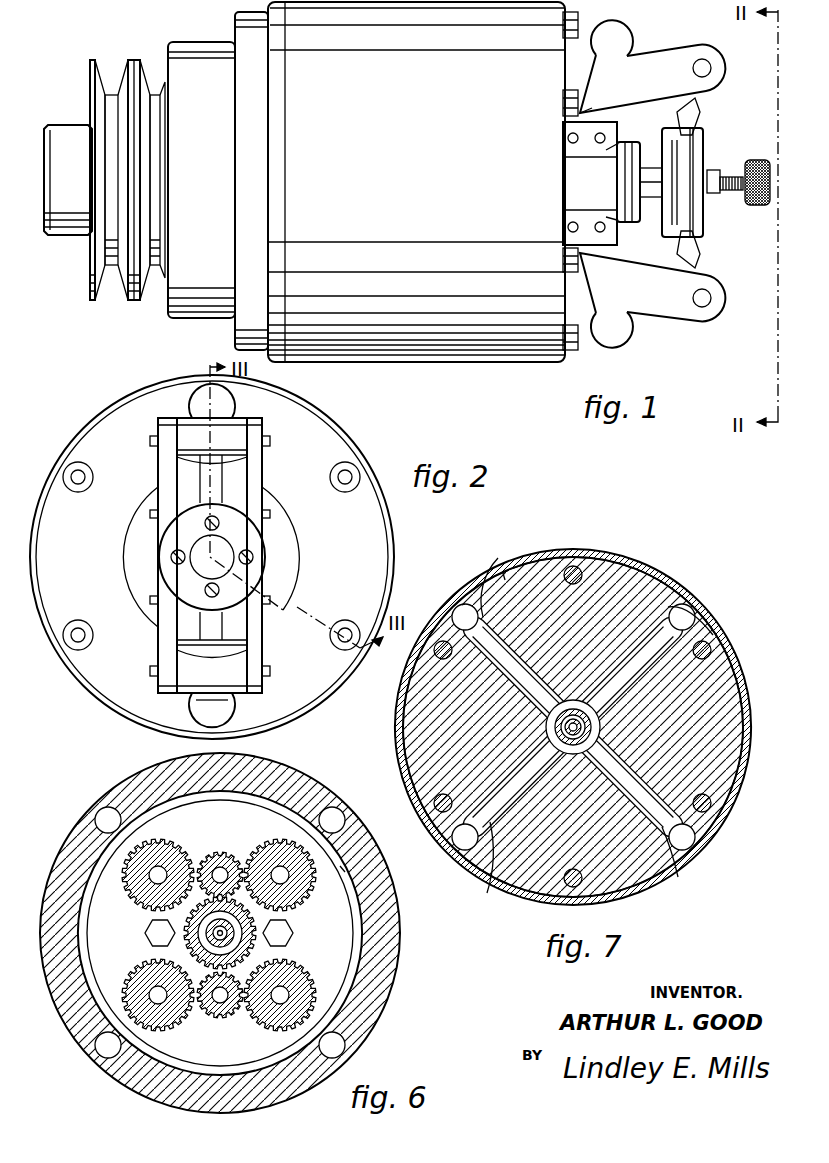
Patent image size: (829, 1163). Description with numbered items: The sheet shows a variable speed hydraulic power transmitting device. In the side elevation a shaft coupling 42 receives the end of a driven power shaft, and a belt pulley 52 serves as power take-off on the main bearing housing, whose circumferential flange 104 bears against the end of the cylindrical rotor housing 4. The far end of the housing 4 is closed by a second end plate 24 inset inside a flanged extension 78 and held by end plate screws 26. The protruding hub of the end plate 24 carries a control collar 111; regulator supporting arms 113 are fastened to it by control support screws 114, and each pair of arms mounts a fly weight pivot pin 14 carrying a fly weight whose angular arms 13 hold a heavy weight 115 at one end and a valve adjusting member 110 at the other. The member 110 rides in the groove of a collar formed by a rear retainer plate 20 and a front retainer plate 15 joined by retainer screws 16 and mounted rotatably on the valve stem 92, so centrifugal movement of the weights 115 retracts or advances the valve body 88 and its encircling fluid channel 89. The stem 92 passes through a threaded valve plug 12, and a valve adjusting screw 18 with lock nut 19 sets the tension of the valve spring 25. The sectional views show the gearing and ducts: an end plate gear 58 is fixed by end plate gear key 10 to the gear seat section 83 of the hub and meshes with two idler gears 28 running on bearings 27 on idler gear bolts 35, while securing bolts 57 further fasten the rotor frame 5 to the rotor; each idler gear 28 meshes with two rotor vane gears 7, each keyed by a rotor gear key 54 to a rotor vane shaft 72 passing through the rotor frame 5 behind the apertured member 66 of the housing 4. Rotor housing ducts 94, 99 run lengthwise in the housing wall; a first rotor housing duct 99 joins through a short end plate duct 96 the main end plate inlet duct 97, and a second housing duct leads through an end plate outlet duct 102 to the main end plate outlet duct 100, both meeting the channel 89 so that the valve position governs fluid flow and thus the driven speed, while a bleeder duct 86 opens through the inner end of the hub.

In FIG. 1, the rotor housing 4 is at (490, 347).
In FIG. 6, the rotor housing 4 is at (385, 906).
In FIG. 6, the rotor frame 5 is at (347, 947).
In FIG. 6, the rotor vane gear 7 is at (302, 910).
In FIG. 6, the end plate gear key 10 is at (187, 918).
In FIG. 1, the valve plug 12 is at (640, 225).
In FIG. 1, the upper clamp lever 13 is at (672, 46).
In FIG. 2, the upper clamp lever 13 is at (187, 423).
In FIG. 1, the fly weight pivot pin 14 is at (708, 64).
In FIG. 2, the fly weight pivot pin 14 is at (150, 441).
In FIG. 1, the front retainer plate 15 is at (701, 140).
In FIG. 2, the front retainer plate 15 is at (252, 557).
In FIG. 2, the retainer screws 16 is at (219, 524).
In FIG. 1, the valve adjusting screw 18 is at (752, 160).
In FIG. 1, the lock nut 19 is at (713, 170).
In FIG. 1, the rear retainer plate 20 is at (698, 232).
In FIG. 2, the second end plate 24 is at (375, 532).
In FIG. 7, the second end plate 24 is at (643, 588).
In FIG. 7, the valve spring 25 is at (594, 724).
In FIG. 6, the valve spring 25 is at (253, 950).
In FIG. 1, the end plate screws 26 is at (585, 340).
In FIG. 2, the end plate screws 26 is at (352, 477).
In FIG. 7, the end plate screws 26 is at (578, 569).
In FIG. 6, the bearing 27 is at (229, 1008).
In FIG. 6, the idler gear 28 is at (210, 1010).
In FIG. 6, the idler gear bolts 35 is at (218, 1019).
In FIG. 1, the shaft coupling 42 is at (62, 226).
In FIG. 1, the belt pulley 52 is at (100, 92).
In FIG. 6, the rotor gear key 54 is at (307, 852).
In FIG. 6, the securing bolts 57 is at (293, 933).
In FIG. 6, the end plate gear 58 is at (270, 957).
In FIG. 6, the apertured member 66 is at (343, 871).
In FIG. 6, the rotor vane shaft 72 is at (305, 896).
In FIG. 1, the flanged extension 78 is at (550, 362).
In FIG. 2, the flanged extension 78 is at (338, 428).
In FIG. 7, the flanged extension 78 is at (560, 548).
In FIG. 6, the intermediate gear seat section 83 is at (187, 950).
In FIG. 6, the bleeder duct 86 is at (145, 933).
In FIG. 7, the valve body 88 is at (553, 711).
In FIG. 7, the fluid-conducting channel 89 is at (550, 727).
In FIG. 1, the valve stem 92 is at (676, 208).
In FIG. 6, the ducts 94 is at (96, 823).
In FIG. 7, the end plate duct 96 is at (690, 612).
In FIG. 7, the main end plate inlet duct 97 is at (673, 637).
In FIG. 6, the rotor housing duct 99 is at (335, 810).
In FIG. 7, the main end plate outlet duct 100 is at (503, 573).
In FIG. 7, the end plate outlet duct 102 is at (462, 605).
In FIG. 1, the circumferential flange 104 is at (265, 6).
In FIG. 1, the valve adjusting member 110 is at (697, 126).
In FIG. 1, the control collar 111 is at (563, 198).
In FIG. 2, the control collar 111 is at (290, 577).
In FIG. 1, the regulator supporting arms 113 is at (648, 86).
In FIG. 2, the regulator supporting arms 113 is at (160, 479).
In FIG. 1, the control support screws 114 is at (603, 133).
In FIG. 2, the control support screws 114 is at (150, 514).
In FIG. 2, the weight 115 is at (204, 397).